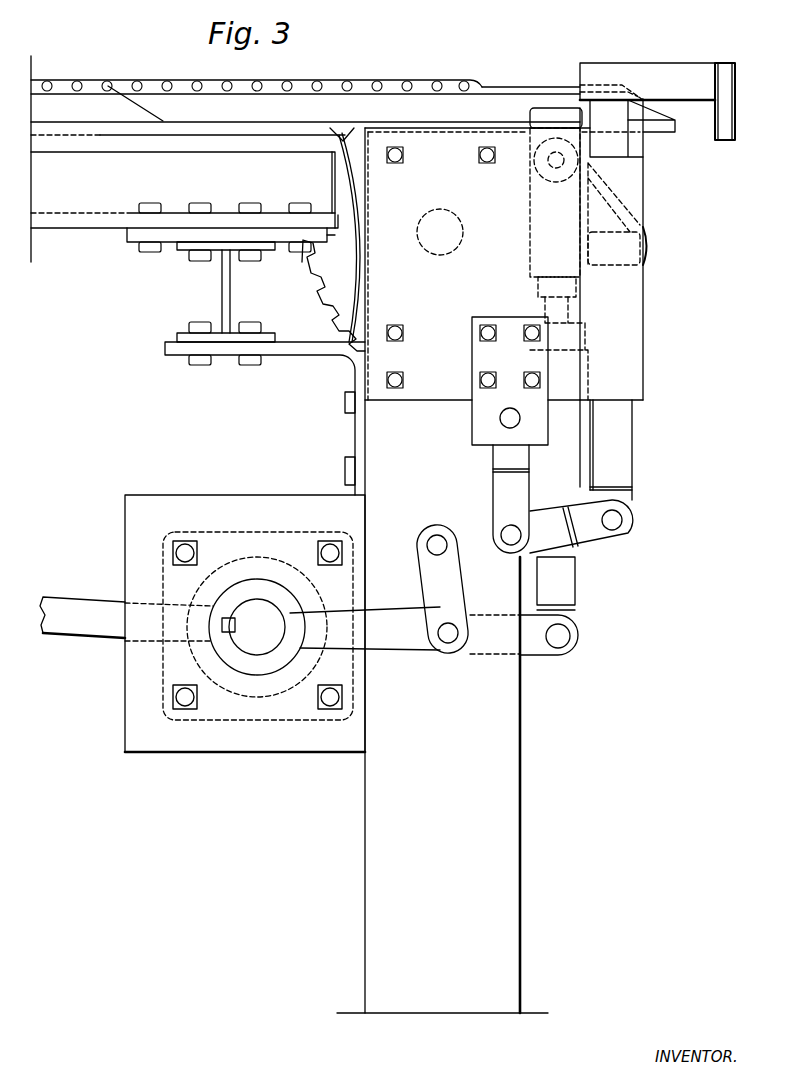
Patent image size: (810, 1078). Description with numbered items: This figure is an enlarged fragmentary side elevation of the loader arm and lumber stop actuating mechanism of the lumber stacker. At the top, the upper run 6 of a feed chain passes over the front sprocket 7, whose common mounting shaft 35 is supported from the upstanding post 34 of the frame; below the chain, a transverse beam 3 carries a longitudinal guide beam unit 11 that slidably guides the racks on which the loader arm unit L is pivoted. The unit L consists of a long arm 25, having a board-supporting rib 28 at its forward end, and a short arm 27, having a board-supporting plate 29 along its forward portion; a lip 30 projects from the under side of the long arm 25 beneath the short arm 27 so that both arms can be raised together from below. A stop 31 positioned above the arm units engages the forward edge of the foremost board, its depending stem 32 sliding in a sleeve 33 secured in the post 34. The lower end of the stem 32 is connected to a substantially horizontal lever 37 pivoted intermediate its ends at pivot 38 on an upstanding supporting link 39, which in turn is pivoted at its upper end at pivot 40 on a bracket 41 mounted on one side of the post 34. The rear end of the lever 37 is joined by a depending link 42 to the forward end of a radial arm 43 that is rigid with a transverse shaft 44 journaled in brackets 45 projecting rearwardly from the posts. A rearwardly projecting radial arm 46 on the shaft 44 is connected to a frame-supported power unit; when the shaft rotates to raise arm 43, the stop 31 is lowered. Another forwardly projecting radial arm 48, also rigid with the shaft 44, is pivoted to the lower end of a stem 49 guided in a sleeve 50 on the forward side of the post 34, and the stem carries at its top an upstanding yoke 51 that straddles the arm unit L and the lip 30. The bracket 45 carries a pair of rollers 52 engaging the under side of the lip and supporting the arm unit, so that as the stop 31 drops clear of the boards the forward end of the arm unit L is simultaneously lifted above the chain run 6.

The transverse beam 3 is at (225, 282).
The upper run 6 is at (330, 82).
The front sprocket 7 is at (335, 333).
The longitudinal guide beam unit 11 is at (93, 226).
The long arm 25 is at (445, 108).
The short arm 27 is at (65, 112).
The board-supporting rib 28 is at (508, 90).
The board-supporting plate 29 is at (67, 90).
The lip 30 is at (224, 130).
The stop 31 is at (605, 68).
The depending stem 32 is at (622, 437).
The sleeve 33 is at (630, 330).
The upstanding post 34 is at (500, 770).
The common mounting shaft 35 is at (463, 220).
The lever 37 is at (592, 527).
The pivot 38 is at (505, 530).
The supporting link 39 is at (500, 478).
The pivot 40 is at (498, 418).
The bracket 41 is at (485, 360).
The depending link 42 is at (432, 582).
The radial arm 43 is at (388, 640).
The transverse shaft 44 is at (252, 607).
The bracket 45 is at (127, 710).
The radial arm 46 is at (66, 627).
The radial arm 48 is at (532, 650).
The stem 49 is at (568, 585).
The sleeve 50 is at (577, 470).
The yoke 51 is at (540, 118).
The roller 52 is at (545, 185).
The loader arm unit L is at (182, 125).